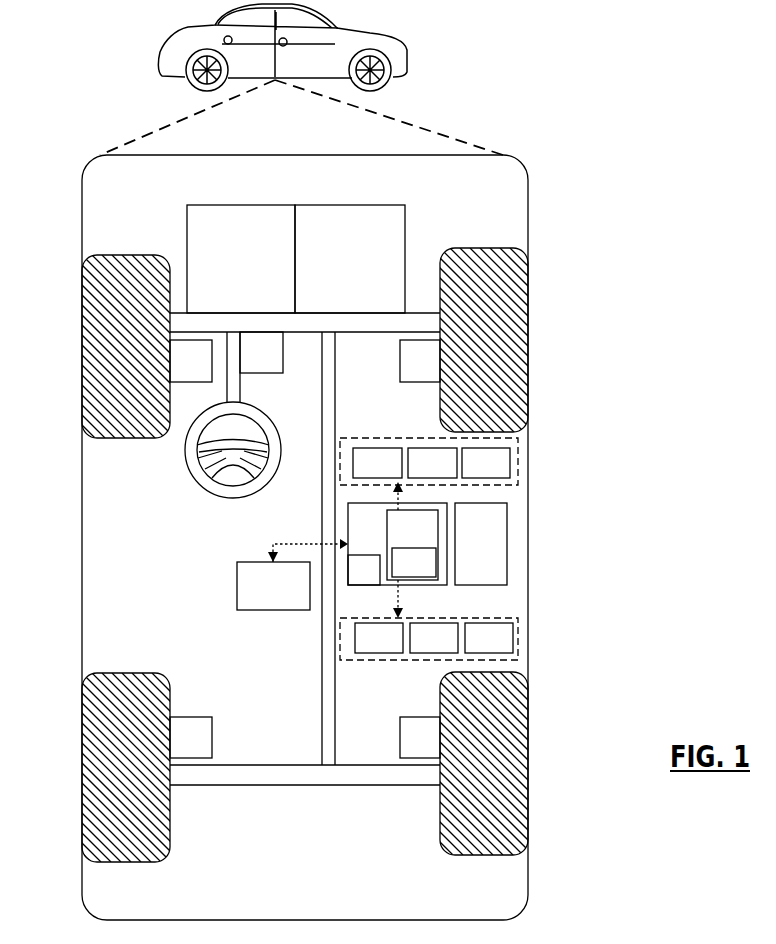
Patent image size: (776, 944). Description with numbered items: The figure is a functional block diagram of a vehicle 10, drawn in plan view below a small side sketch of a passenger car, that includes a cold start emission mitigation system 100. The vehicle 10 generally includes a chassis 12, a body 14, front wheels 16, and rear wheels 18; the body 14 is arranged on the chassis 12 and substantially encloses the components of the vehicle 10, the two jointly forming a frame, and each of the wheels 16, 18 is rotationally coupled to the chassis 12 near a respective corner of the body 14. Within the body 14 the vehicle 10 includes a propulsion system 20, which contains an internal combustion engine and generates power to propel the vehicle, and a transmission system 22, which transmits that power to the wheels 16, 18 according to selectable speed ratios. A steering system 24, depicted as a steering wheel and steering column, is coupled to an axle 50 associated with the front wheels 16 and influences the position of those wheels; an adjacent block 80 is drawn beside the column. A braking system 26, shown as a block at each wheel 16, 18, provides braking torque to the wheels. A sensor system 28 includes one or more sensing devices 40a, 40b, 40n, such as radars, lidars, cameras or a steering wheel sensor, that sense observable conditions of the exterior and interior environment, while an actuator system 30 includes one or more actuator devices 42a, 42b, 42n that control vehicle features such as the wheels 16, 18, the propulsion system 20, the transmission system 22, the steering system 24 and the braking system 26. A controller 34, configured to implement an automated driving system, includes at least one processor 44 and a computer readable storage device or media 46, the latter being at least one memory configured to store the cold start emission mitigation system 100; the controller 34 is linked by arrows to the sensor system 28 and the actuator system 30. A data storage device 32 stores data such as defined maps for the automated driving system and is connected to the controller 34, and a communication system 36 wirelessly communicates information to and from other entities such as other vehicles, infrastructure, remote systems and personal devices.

The vehicle 10 is at (162, 58).
The chassis 12 is at (322, 703).
The body 14 is at (82, 538).
The front wheels 16 is at (124, 255).
The rear wheels 18 is at (142, 862).
The propulsion system 20 is at (232, 270).
The transmission system 22 is at (340, 270).
The steering system 24 is at (163, 477).
The braking system 26 is at (181, 371).
The sensor system 28 is at (370, 438).
The actuator system 30 is at (395, 661).
The data storage device 32 is at (263, 595).
The controller 34 is at (351, 530).
The communication system 36 is at (471, 555).
The sensing device 40a is at (363, 473).
The sensing device 40b is at (418, 473).
The sensing device 40n is at (472, 473).
The actuator device 42a is at (365, 648).
The actuator device 42b is at (420, 648).
The actuator device 42n is at (475, 648).
The processor 44 is at (354, 582).
The computer readable storage device or media 46 is at (402, 543).
The axle 50 is at (382, 343).
The steering actuator / module 80 is at (252, 362).
The cold start emission mitigation system 100 is at (400, 572).